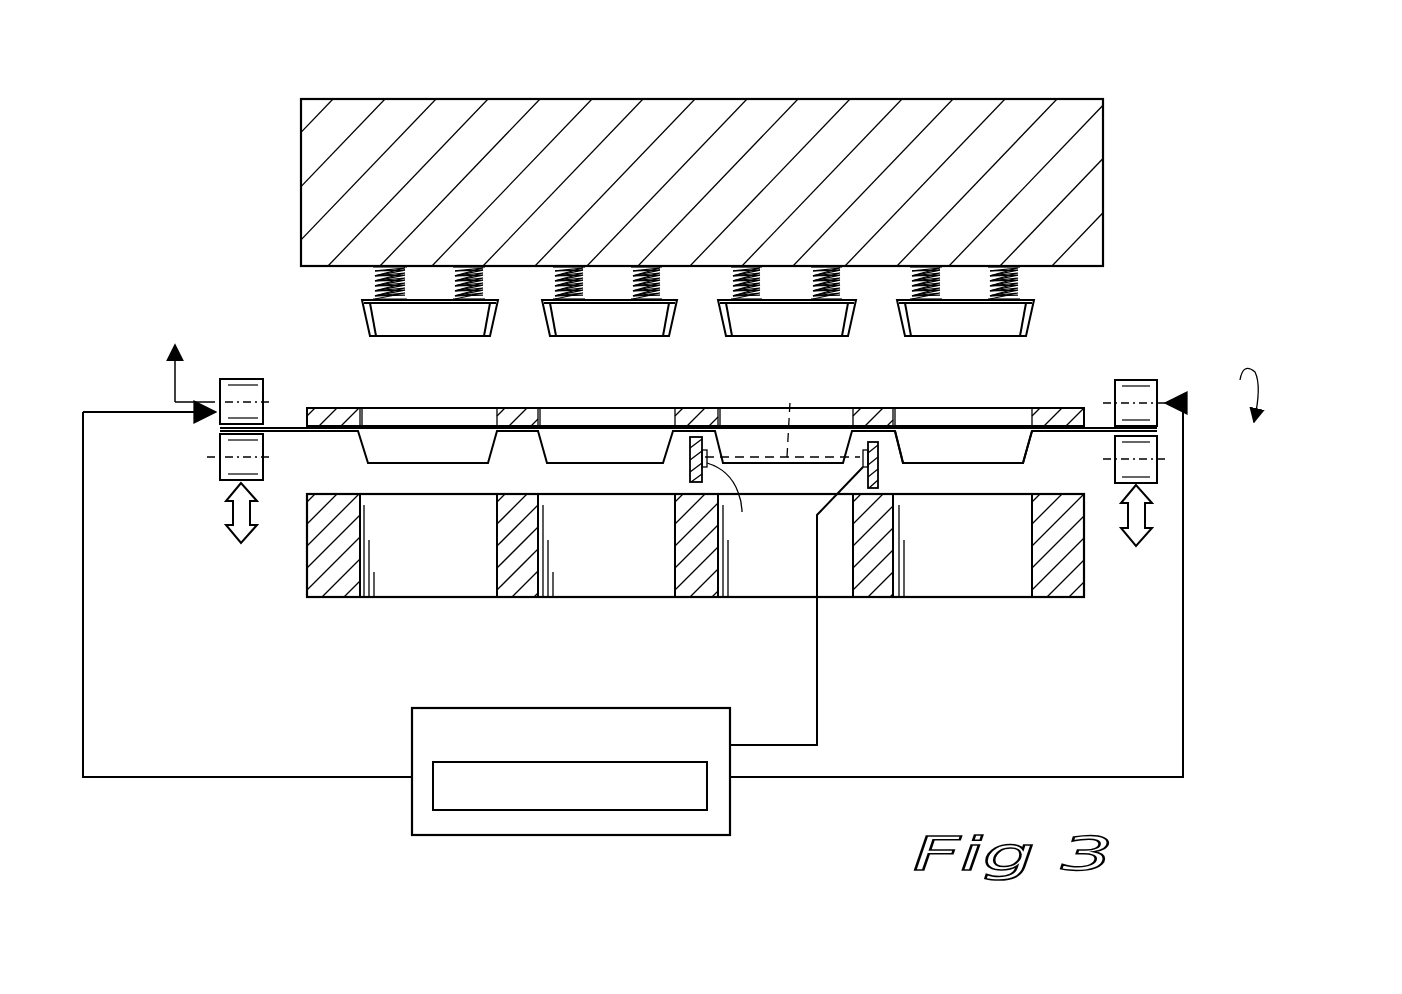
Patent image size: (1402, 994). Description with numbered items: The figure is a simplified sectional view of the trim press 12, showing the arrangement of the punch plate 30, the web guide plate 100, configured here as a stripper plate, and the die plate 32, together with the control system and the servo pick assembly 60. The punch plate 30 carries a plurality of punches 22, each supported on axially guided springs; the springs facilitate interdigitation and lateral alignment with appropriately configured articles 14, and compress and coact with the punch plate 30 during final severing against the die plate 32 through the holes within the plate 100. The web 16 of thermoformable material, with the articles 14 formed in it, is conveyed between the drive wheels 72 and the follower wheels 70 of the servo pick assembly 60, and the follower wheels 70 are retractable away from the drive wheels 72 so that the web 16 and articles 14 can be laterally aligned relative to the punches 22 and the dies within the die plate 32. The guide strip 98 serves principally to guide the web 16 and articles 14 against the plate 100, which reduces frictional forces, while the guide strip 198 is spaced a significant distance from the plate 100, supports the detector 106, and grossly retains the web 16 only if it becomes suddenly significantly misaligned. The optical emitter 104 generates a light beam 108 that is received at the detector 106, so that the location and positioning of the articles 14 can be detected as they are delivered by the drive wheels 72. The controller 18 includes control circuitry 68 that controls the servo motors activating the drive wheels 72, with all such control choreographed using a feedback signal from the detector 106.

The trim press 12 is at (1262, 196).
The articles 14 is at (1030, 456).
The web 16 is at (1072, 432).
The controller 18 is at (593, 707).
The punches 22 is at (677, 320).
The punch plate 30 is at (1103, 153).
The die plate 32 is at (1063, 600).
The servo pick assembly 60 is at (200, 431).
The control circuitry 68 is at (432, 797).
The follower wheels 70 is at (220, 465).
The drive wheels 72 is at (262, 388).
The guide strip 98 is at (688, 477).
The web guide plate 100 is at (1088, 407).
The optical emitter 104 is at (741, 503).
The detector 106 is at (860, 466).
The light beam 108 is at (782, 413).
The guide strip 198 is at (884, 456).